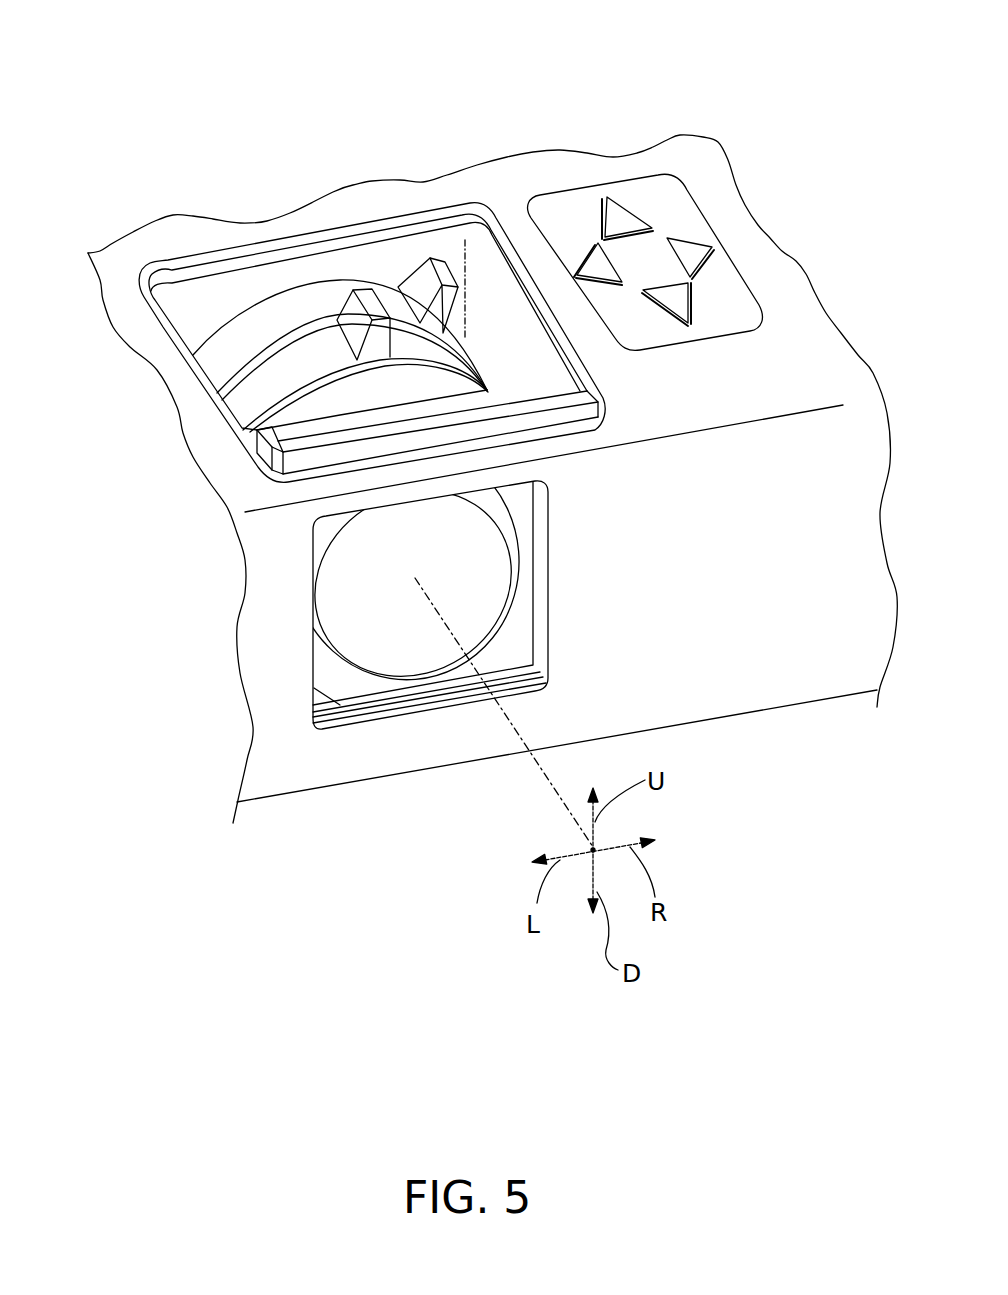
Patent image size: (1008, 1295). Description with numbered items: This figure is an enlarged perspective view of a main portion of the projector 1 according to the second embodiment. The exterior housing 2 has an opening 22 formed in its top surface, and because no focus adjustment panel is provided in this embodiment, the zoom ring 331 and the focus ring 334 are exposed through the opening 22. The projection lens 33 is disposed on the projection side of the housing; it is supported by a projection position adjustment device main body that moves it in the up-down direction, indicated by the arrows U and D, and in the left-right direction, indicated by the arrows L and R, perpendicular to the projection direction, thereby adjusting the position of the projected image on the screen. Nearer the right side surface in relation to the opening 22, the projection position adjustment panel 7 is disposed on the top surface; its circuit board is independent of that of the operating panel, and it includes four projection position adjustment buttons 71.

The projector 1 is at (436, 100).
The exterior housing 2 is at (783, 281).
The projection position adjustment panel 7 is at (646, 182).
The projection position adjustment buttons 71 is at (590, 263).
The opening 22 is at (550, 338).
The projection lens 33 is at (477, 567).
The zoom ring 331 is at (445, 263).
The focus ring 334 is at (245, 400).